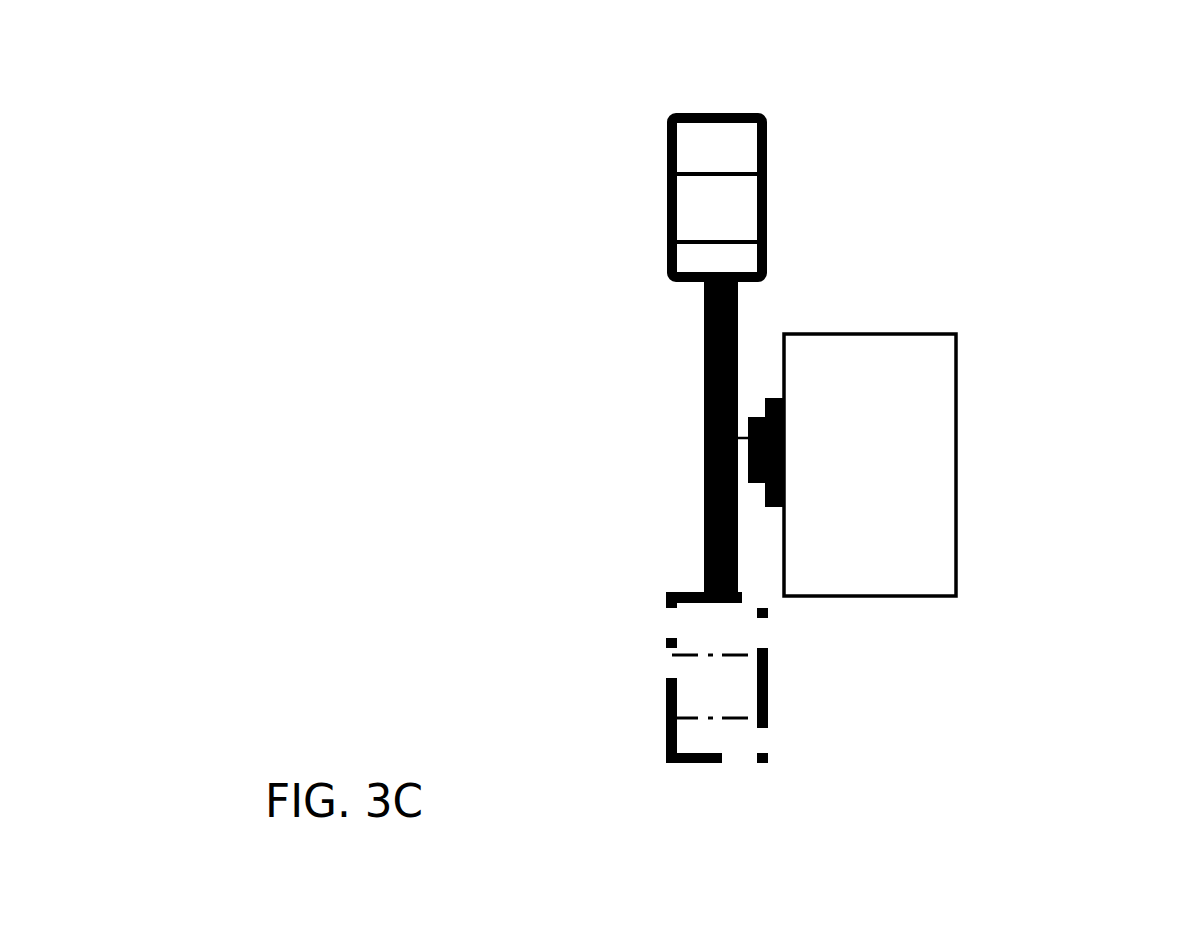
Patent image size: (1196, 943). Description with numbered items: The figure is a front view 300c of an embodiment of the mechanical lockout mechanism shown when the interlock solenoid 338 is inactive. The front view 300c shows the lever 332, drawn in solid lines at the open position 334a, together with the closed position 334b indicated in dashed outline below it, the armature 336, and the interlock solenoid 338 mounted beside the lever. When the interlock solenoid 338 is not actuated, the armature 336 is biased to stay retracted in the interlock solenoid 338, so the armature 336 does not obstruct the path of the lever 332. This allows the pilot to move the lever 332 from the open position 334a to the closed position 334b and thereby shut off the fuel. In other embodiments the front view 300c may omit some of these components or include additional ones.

The front view 300c is at (1170, 72).
The lever 332 is at (768, 212).
The open position 334a is at (545, 160).
The closed position 334b is at (560, 645).
The armature 336 is at (705, 438).
The interlock solenoid 338 is at (897, 527).